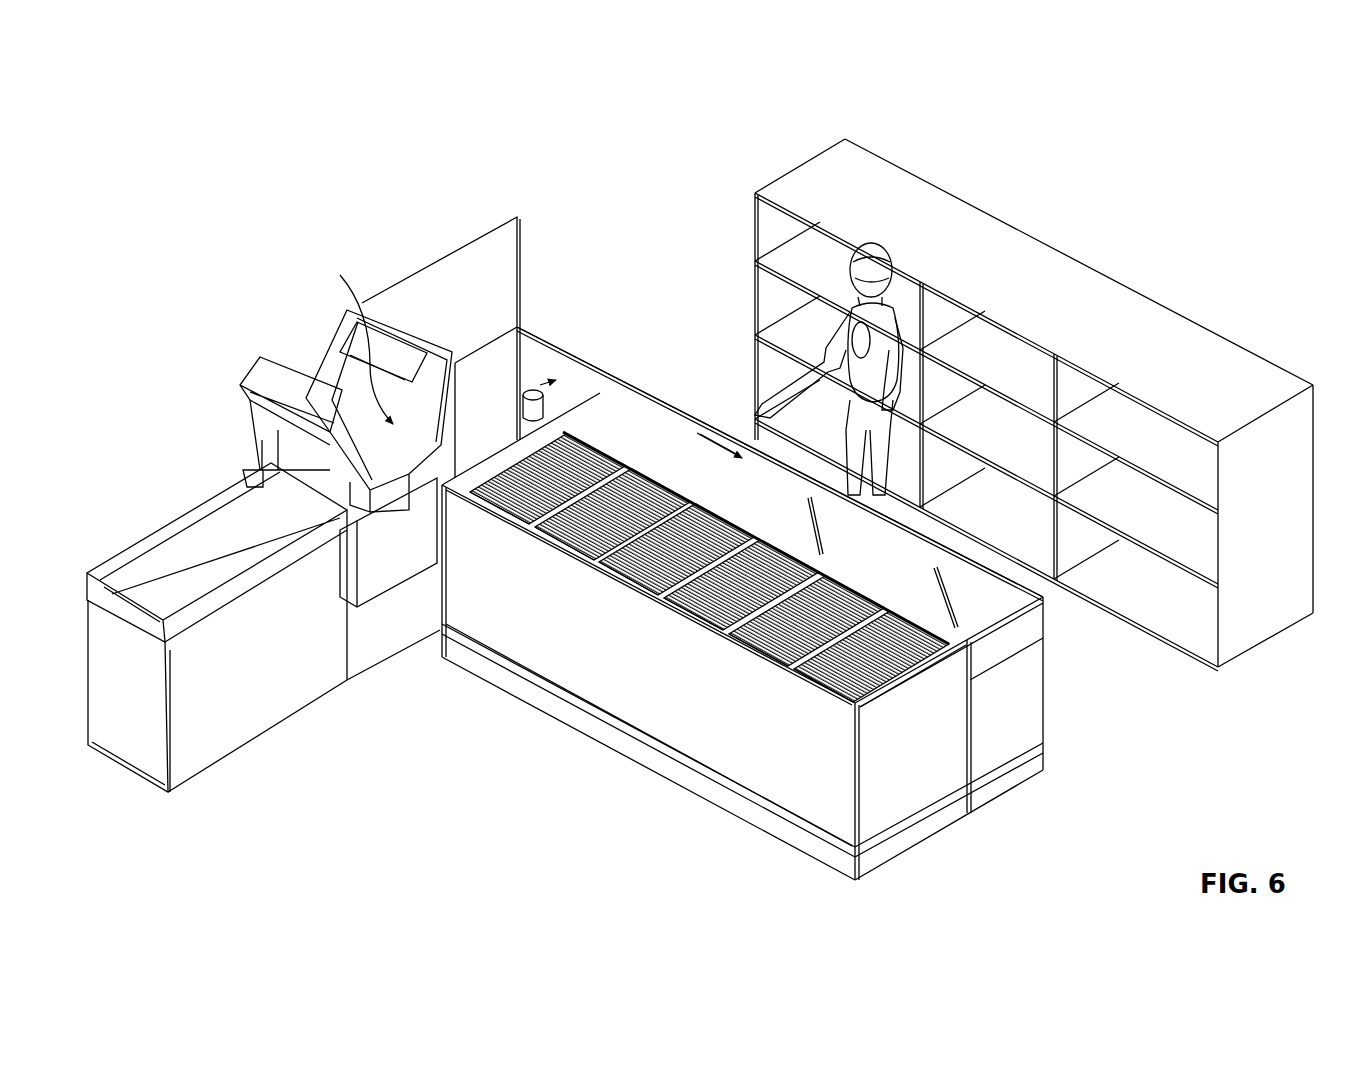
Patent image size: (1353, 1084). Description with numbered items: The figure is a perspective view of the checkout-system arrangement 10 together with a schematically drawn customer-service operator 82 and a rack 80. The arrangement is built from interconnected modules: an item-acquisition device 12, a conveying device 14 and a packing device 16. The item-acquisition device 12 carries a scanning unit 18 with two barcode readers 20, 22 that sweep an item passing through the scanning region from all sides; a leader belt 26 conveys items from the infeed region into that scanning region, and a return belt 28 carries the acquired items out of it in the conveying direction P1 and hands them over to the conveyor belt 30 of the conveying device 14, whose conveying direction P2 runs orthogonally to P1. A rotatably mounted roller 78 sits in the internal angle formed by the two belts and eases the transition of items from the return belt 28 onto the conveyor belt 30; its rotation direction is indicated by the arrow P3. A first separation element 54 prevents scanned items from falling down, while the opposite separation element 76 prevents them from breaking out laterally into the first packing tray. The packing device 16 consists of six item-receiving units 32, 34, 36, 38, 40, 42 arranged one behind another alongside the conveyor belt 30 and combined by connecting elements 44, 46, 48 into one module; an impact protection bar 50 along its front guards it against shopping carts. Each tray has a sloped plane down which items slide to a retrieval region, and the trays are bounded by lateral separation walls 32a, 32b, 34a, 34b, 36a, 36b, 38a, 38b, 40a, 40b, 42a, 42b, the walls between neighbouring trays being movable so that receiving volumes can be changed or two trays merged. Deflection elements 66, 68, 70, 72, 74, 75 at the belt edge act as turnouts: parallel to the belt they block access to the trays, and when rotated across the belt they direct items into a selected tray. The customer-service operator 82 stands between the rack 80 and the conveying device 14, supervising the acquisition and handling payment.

The checkout-system arrangement 10 is at (574, 188).
The item-acquisition device 12 is at (266, 565).
The conveying device 14 is at (670, 347).
The packing device 16 is at (742, 603).
The scanning unit 18 is at (330, 373).
The barcode reader 20 is at (390, 320).
The barcode reader 22 is at (263, 373).
The leader belt 26 is at (220, 550).
The return belt 28 is at (365, 360).
The conveyor belt 30 is at (755, 492).
The item-receiving unit 32 is at (535, 522).
The lateral separation wall 32a is at (530, 520).
The lateral separation wall 32b is at (540, 545).
The item-receiving unit 34 is at (593, 552).
The lateral separation wall 34a is at (580, 548).
The lateral separation wall 34b is at (600, 572).
The item-receiving unit 36 is at (661, 589).
The lateral separation wall 36a is at (645, 590).
The lateral separation wall 36b is at (665, 612).
The item-receiving unit 38 is at (731, 625).
The lateral separation wall 38a is at (715, 628).
The lateral separation wall 38b is at (735, 650).
The item-receiving unit 40 is at (800, 660).
The lateral separation wall 40a is at (790, 660).
The lateral separation wall 40b is at (810, 685).
The item-receiving unit 42 is at (869, 697).
The lateral separation wall 42a is at (860, 700).
The lateral separation wall 42b is at (880, 720).
The connecting element 44 is at (612, 695).
The connecting element 46 is at (892, 774).
The connecting element 48 is at (445, 503).
The impact protection bar 50 is at (744, 790).
The separation element 54 is at (430, 307).
The deflection element 66 is at (940, 603).
The deflection element 68 is at (862, 585).
The deflection element 70 is at (814, 535).
The deflection element 72 is at (702, 515).
The deflection element 74 is at (646, 472).
The deflection element 75 is at (582, 442).
The separation element 76 is at (465, 405).
The roller 78 is at (536, 390).
The rack 80 is at (1135, 305).
The customer-service operator 82 is at (878, 262).
The conveying direction of the return belt P1 is at (297, 340).
The conveying direction of the conveyor belt P2 is at (702, 430).
The rotation direction of the roller P3 is at (551, 370).